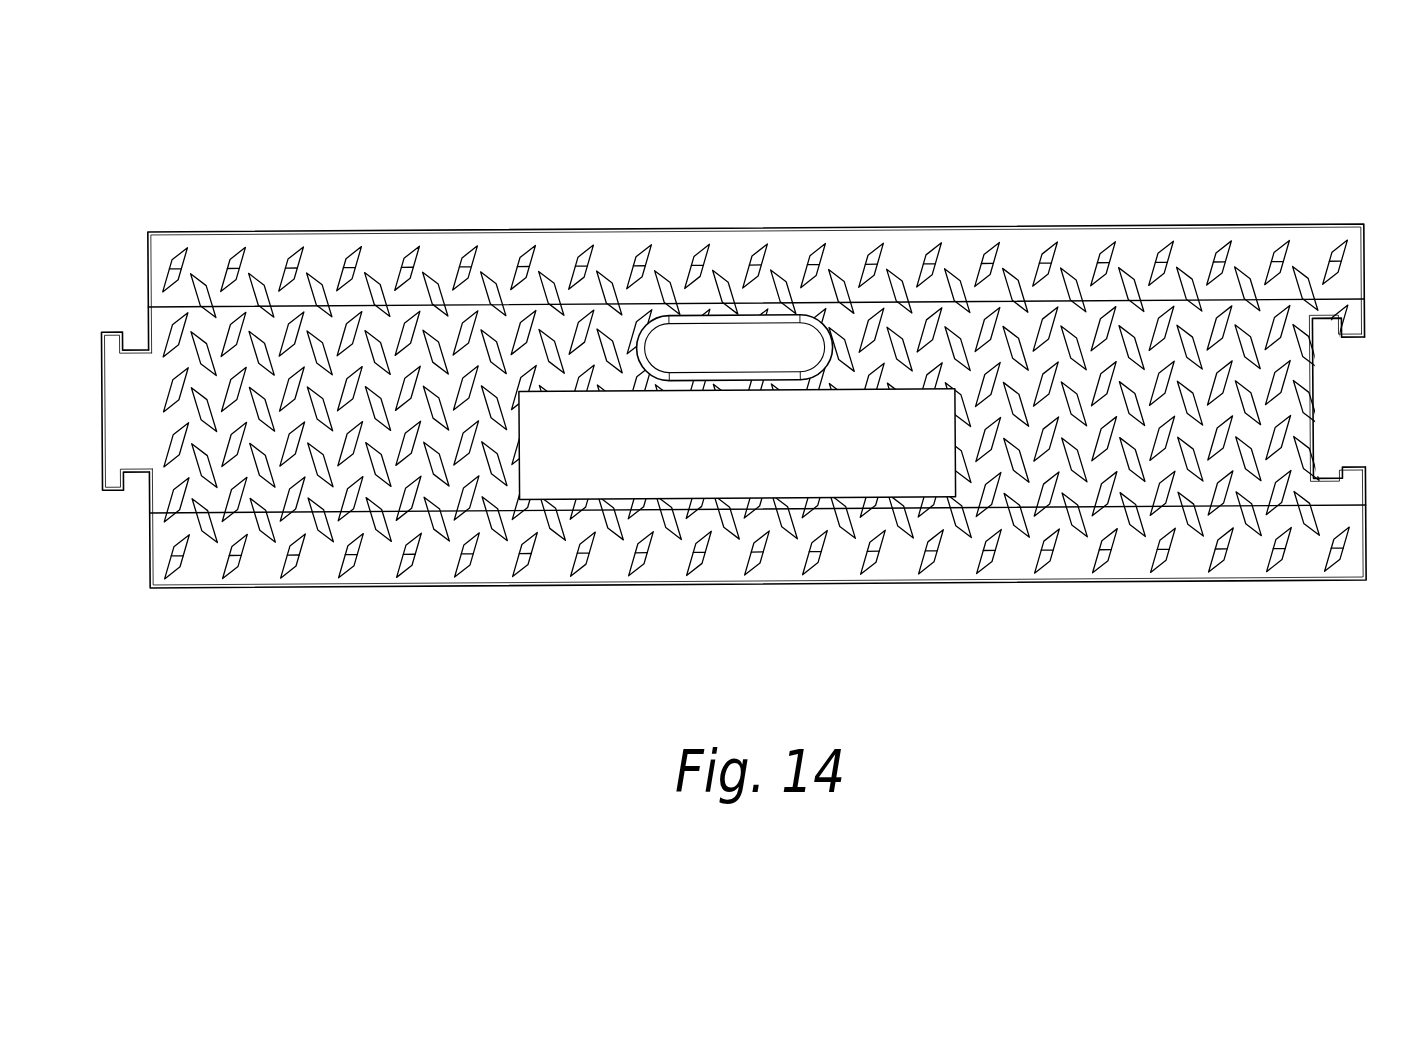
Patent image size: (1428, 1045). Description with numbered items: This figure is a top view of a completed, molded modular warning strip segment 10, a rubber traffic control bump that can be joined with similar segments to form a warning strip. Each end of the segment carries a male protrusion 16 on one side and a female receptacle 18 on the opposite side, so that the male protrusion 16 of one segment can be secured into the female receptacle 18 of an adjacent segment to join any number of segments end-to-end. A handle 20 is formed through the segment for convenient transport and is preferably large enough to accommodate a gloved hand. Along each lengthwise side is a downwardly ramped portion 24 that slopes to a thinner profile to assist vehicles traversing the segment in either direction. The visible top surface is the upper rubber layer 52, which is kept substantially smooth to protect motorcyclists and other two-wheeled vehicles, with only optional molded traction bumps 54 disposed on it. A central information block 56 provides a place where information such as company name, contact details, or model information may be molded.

The modular warning strip segment 10 is at (487, 645).
The male protrusion 16 is at (112, 330).
The female receptacle 18 is at (1343, 462).
The handle 20 is at (693, 322).
The downwardly ramped portion 24 is at (268, 250).
The upper rubber layer 52 is at (413, 353).
The molded traction bump 54 is at (1018, 517).
The information block 56 is at (877, 422).